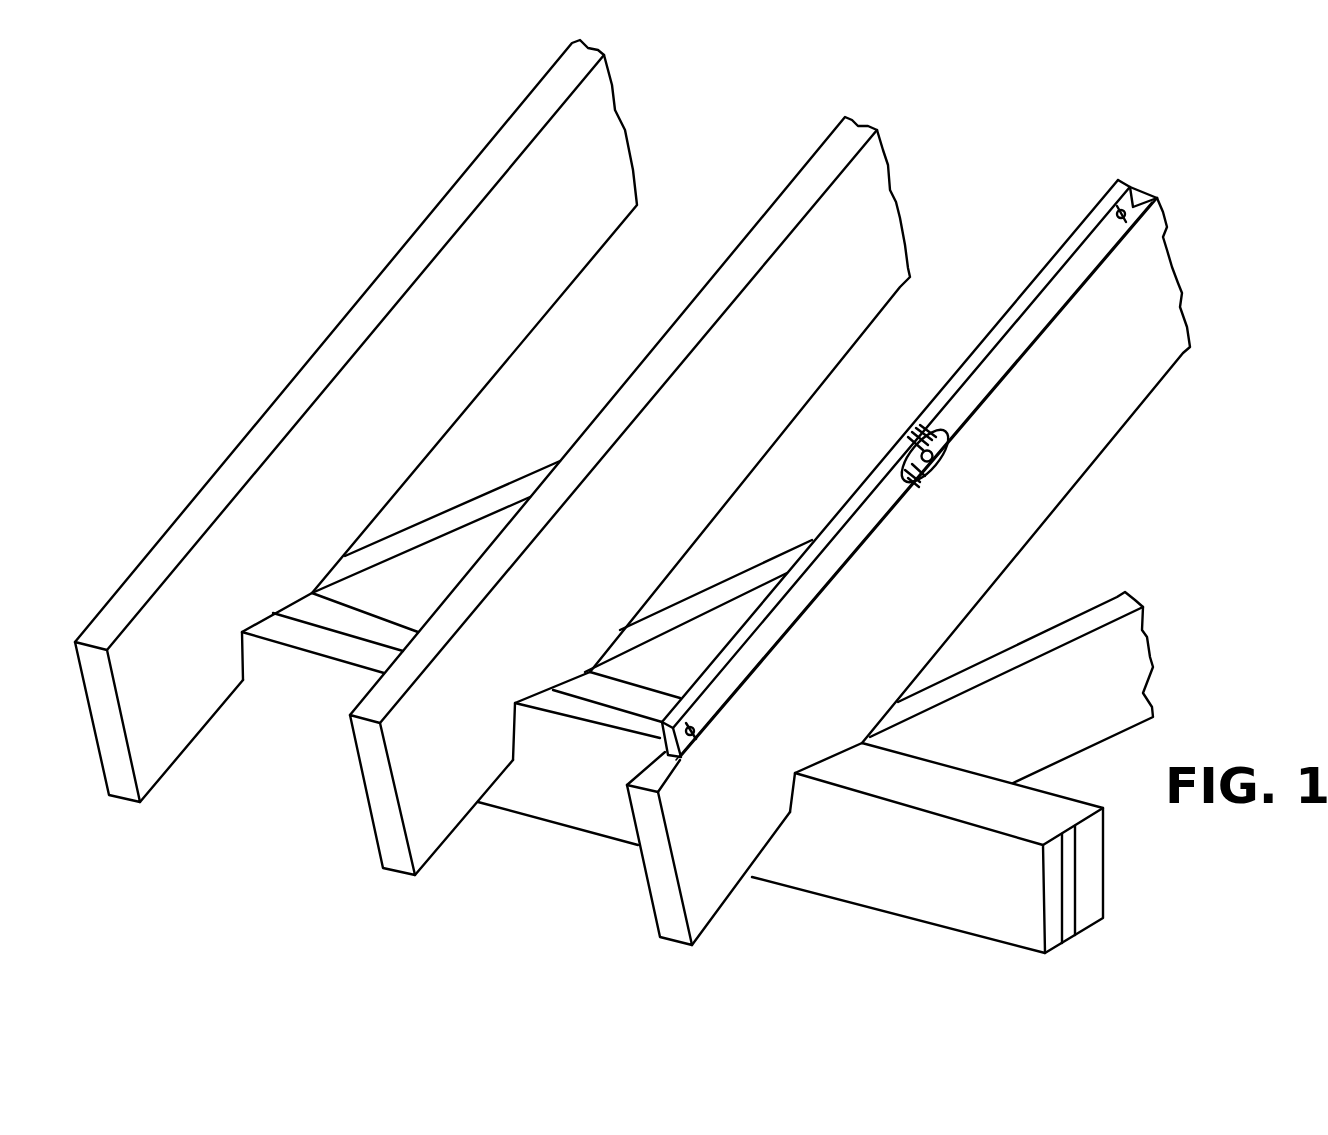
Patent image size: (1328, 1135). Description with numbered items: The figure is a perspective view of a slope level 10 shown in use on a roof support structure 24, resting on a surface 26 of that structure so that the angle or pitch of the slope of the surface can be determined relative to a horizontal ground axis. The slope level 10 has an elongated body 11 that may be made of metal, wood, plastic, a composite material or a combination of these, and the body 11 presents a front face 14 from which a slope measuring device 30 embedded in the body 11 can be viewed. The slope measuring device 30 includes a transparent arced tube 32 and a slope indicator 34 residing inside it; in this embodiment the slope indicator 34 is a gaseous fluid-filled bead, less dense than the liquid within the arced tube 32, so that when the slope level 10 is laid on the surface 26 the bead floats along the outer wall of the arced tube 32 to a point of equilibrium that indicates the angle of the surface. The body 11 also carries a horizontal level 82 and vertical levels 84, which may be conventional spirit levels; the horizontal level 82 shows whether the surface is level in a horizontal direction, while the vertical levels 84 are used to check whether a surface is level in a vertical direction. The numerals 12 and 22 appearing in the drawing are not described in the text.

The slope level 10 is at (944, 429).
The body 11 is at (1022, 326).
The strap 12 is at (1043, 275).
The front face 14 is at (1100, 233).
The first joist 22 is at (853, 499).
The roof support structure 24 is at (1072, 529).
The surface 26 is at (652, 777).
The slope measuring device 30 is at (941, 469).
The arced tube 32 is at (917, 482).
The slope indicator 34 is at (930, 433).
The horizontal level 82 is at (937, 457).
The vertical level 84 is at (1138, 196).